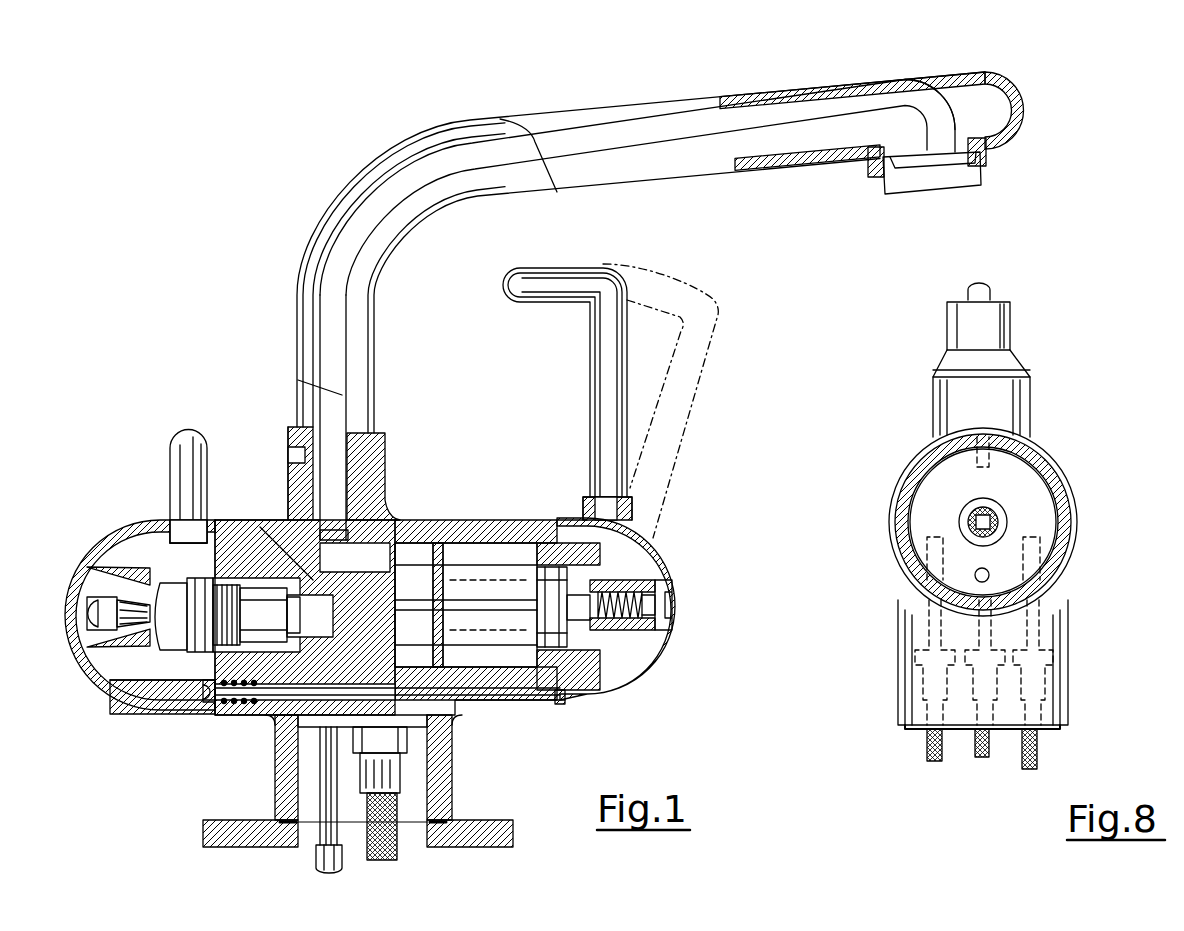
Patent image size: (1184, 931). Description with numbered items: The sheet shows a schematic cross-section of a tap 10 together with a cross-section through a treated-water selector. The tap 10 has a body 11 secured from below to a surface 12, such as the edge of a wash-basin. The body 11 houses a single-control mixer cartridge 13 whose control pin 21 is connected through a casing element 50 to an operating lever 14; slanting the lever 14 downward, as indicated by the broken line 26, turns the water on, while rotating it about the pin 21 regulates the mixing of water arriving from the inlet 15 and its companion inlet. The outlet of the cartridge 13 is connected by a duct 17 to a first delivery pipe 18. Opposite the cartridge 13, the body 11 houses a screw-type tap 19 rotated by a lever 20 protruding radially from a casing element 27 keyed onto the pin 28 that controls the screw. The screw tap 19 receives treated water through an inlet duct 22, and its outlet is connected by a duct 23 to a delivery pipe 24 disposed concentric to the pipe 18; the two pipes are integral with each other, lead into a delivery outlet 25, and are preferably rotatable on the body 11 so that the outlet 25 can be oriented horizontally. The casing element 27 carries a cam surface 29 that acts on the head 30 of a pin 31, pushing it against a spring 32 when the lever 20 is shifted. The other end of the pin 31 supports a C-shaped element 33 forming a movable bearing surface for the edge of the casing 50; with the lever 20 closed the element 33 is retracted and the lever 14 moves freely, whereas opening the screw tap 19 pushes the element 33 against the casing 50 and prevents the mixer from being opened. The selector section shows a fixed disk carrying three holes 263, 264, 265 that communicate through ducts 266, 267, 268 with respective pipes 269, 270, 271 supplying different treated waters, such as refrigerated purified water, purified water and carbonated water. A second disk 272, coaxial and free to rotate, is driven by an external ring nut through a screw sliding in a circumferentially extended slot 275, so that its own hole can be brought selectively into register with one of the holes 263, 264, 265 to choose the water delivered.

In FIG. 1, the tap 10 is at (314, 184).
In FIG. 1, the body 11 is at (428, 525).
In FIG. 1, the surface 12 is at (480, 820).
In FIG. 1, the single-control mixer cartridge 13 is at (490, 565).
In FIG. 1, the operating lever 14 is at (600, 357).
In FIG. 1, the inlet 15 is at (383, 850).
In FIG. 1, the duct 17 is at (372, 560).
In FIG. 1, the first delivery pipe 18 is at (640, 132).
In FIG. 1, the screw-type tap 19 is at (112, 692).
In FIG. 1, the lever 20 is at (172, 455).
In FIG. 1, the control pin 21 is at (620, 633).
In FIG. 1, the inlet duct 22 is at (313, 840).
In FIG. 1, the duct 23 is at (293, 510).
In FIG. 1, the delivery pipe 24 is at (688, 166).
In FIG. 1, the delivery outlet 25 is at (914, 208).
In FIG. 1, the broken line 26 is at (718, 312).
In FIG. 1, the casing element 27 is at (80, 665).
In FIG. 1, the pin 28 is at (170, 600).
In FIG. 1, the cam surface 29 is at (210, 703).
In FIG. 1, the head 30 is at (203, 695).
In FIG. 1, the pin 31 is at (483, 710).
In FIG. 1, the spring 32 is at (235, 707).
In FIG. 1, the C-shaped element 33 is at (560, 704).
In FIG. 1, the casing element 50 is at (645, 556).
In FIG. 8, the hole 263 is at (987, 567).
In FIG. 8, the hole 264 is at (923, 537).
In FIG. 8, the hole 265 is at (1077, 533).
In FIG. 8, the duct 266 is at (980, 630).
In FIG. 8, the duct 267 is at (933, 622).
In FIG. 8, the duct 268 is at (1073, 633).
In FIG. 8, the pipe 269 is at (968, 747).
In FIG. 8, the pipe 270 is at (925, 740).
In FIG. 8, the pipe 271 is at (1038, 745).
In FIG. 8, the second disk 272 is at (937, 480).
In FIG. 8, the circumferentially extended slot 275 is at (1060, 457).